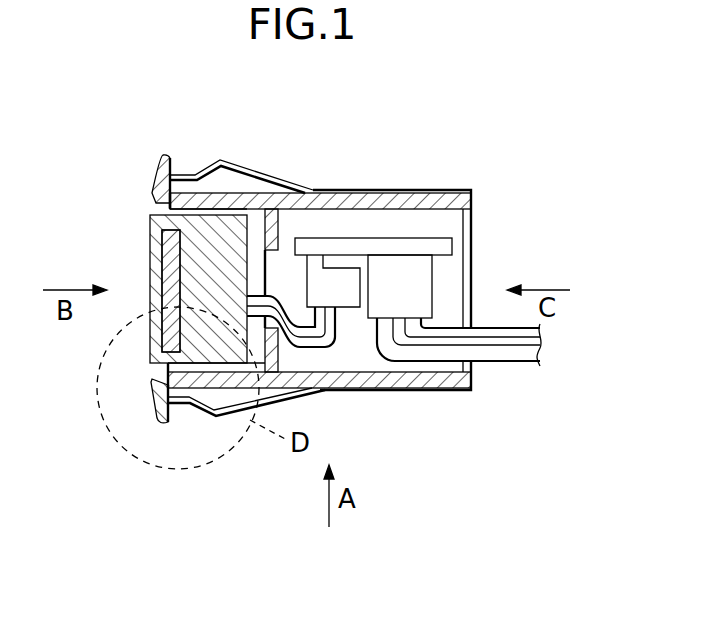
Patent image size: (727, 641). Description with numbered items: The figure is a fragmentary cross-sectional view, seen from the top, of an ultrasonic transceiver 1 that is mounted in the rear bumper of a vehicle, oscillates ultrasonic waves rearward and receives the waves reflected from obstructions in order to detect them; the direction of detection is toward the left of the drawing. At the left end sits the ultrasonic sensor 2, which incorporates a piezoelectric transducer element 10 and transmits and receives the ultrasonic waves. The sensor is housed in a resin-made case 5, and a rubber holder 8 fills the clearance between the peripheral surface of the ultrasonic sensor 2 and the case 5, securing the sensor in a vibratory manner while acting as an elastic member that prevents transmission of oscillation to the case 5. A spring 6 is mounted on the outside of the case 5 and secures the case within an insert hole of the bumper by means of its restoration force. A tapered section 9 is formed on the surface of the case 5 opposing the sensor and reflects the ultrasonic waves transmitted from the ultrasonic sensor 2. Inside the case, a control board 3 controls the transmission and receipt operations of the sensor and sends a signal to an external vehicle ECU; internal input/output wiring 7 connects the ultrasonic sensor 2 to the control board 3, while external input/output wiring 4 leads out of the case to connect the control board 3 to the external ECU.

The ultrasonic transceiver 1 is at (493, 240).
The ultrasonic sensor 2 is at (208, 240).
The control board 3 is at (363, 238).
The external input/output wiring 4 is at (501, 353).
The resin-made case 5 is at (162, 407).
The spring 6 is at (253, 170).
The internal input/output wiring 7 is at (317, 347).
The rubber holder 8 is at (168, 210).
The tapered section 9 is at (155, 387).
The piezoelectric transducer element 10 is at (168, 256).